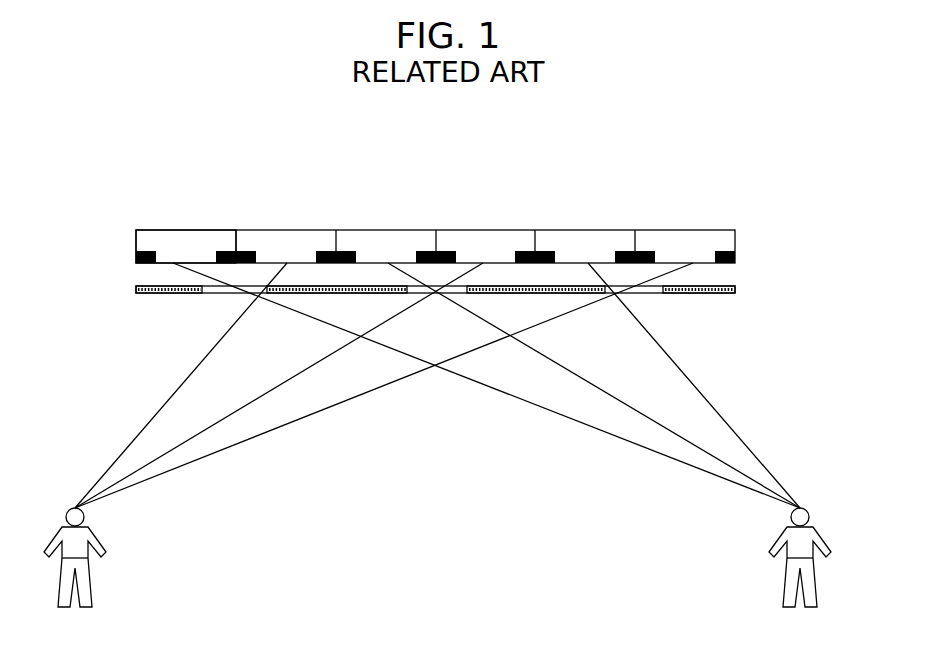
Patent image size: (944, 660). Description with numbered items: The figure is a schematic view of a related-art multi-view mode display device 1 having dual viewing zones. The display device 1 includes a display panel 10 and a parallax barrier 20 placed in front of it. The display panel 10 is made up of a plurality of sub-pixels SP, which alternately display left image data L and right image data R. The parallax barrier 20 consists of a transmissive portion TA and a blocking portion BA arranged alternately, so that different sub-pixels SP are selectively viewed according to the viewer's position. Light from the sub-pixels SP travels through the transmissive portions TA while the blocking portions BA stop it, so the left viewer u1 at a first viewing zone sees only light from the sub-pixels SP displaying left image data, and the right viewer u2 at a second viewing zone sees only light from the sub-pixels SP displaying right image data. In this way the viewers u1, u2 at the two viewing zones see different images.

The display device 1 is at (630, 168).
The display panel 10 is at (718, 220).
The parallax barrier 20 is at (750, 289).
The sub-pixel SP is at (202, 238).
The transmissive portion TA is at (653, 293).
The blocking portion BA is at (702, 293).
The left viewer u1 is at (88, 557).
The right viewer u2 is at (809, 557).